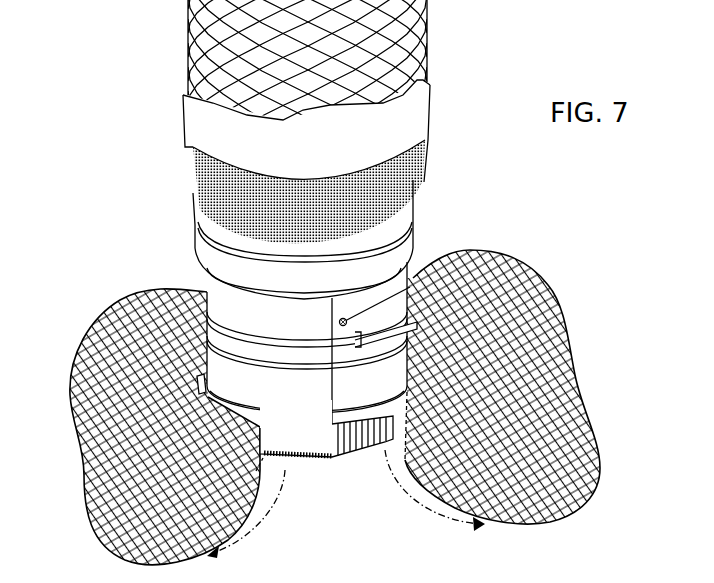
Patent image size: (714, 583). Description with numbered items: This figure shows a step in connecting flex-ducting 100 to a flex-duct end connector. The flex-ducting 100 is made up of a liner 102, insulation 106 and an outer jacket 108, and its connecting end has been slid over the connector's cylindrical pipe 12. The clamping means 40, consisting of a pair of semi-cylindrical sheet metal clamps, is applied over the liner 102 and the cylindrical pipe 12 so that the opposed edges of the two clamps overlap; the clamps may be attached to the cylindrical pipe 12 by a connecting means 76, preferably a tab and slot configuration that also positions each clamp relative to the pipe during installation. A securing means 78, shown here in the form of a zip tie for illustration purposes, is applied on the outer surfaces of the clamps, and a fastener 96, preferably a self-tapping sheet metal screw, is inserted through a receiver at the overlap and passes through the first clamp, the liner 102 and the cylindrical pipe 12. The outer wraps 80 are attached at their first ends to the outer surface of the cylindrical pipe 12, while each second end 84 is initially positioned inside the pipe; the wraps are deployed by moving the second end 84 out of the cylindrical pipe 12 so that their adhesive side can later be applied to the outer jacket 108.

The flex-ducting 100 is at (503, 36).
The outer jacket 108 is at (418, 113).
The insulation 106 is at (413, 177).
The liner 102 is at (410, 232).
The clamping means 40 is at (305, 404).
The securing means 78 is at (207, 298).
The fastener 96 is at (413, 280).
The connecting means 76 is at (200, 380).
The cylindrical pipe 12 is at (309, 448).
The outer wraps 80 is at (348, 407).
The second end 84 is at (82, 457).